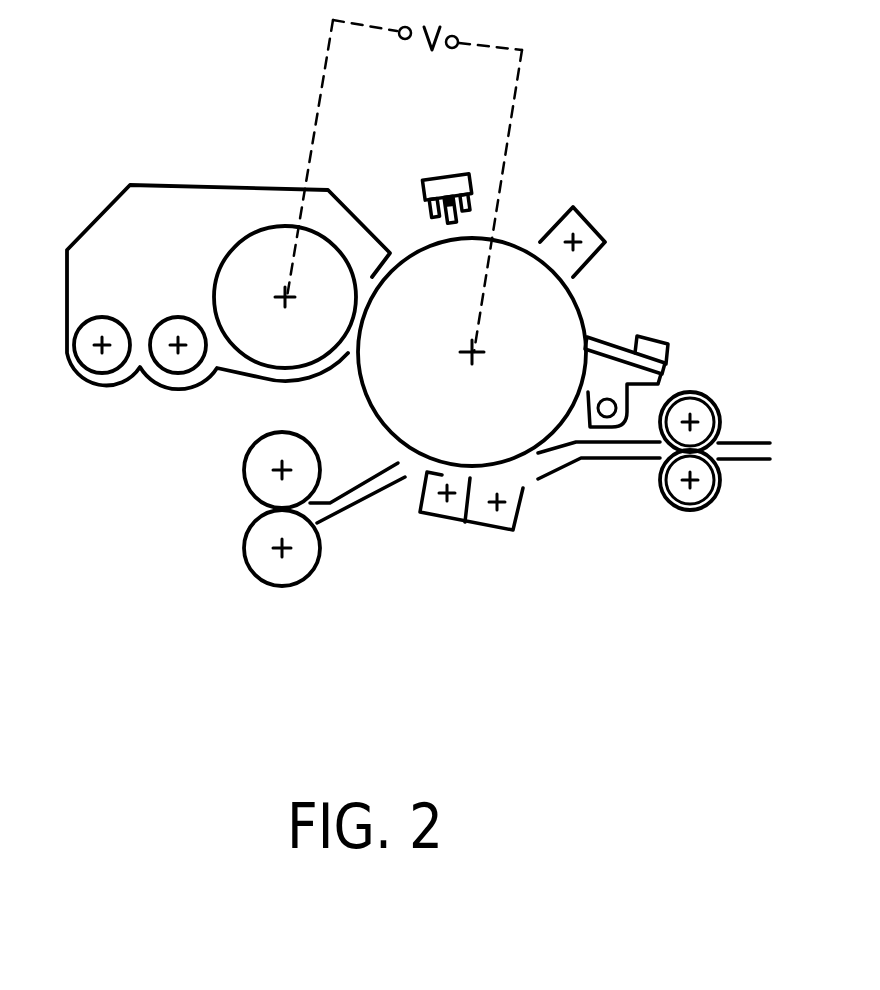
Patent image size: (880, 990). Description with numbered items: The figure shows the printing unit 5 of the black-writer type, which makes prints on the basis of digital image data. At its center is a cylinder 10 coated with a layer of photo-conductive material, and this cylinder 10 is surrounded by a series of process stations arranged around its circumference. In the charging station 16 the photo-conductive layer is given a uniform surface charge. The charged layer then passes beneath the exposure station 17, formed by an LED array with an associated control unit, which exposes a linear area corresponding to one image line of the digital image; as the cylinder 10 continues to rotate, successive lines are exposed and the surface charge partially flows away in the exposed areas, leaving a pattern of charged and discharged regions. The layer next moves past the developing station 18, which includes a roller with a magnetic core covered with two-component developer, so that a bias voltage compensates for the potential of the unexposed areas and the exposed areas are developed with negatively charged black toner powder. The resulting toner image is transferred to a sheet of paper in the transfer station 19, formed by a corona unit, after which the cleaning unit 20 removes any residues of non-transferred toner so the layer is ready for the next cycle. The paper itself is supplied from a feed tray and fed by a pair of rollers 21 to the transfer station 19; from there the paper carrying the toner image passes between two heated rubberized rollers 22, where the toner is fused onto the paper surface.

The printing unit 5 is at (578, 143).
The cylinder 10 is at (580, 305).
The charging station 16 is at (587, 217).
The exposure station 17 is at (445, 170).
The developing station 18 is at (252, 189).
The transfer station 19 is at (443, 521).
The cleaning unit 20 is at (613, 338).
The pair of rollers 21 is at (242, 547).
The heated rubberized rollers 22 is at (683, 510).